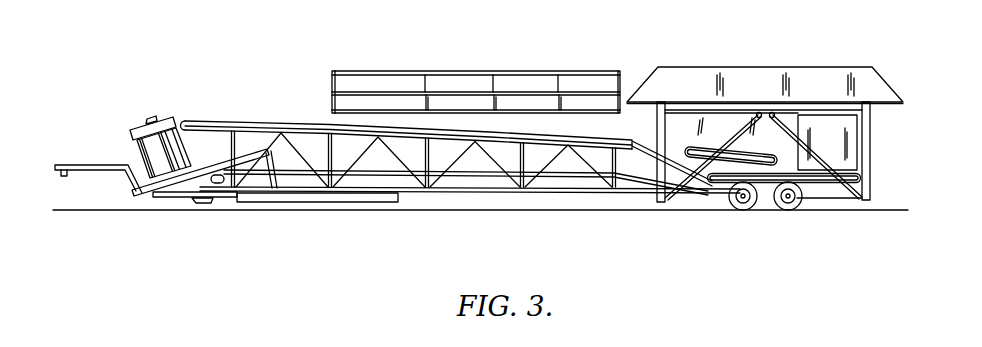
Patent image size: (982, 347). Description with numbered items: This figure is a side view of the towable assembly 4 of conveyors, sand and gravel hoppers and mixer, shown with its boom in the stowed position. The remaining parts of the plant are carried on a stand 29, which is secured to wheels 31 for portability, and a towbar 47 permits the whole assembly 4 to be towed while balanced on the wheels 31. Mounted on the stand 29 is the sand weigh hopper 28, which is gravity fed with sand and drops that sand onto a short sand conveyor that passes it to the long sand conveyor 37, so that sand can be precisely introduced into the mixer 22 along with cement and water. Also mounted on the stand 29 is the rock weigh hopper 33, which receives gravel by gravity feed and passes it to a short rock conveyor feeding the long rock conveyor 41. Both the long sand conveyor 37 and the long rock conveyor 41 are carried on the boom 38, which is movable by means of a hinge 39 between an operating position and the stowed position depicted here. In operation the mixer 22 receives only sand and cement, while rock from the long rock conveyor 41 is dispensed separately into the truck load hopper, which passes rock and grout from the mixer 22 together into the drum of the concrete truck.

The feed hopper 4 is at (147, 118).
The mixer 22 is at (200, 121).
The long sand conveyor 37 is at (263, 120).
The towbar 47 is at (97, 164).
The weigh hopper 28 is at (733, 120).
The rock weigh hopper 33 is at (822, 115).
The long rock conveyor 41 is at (475, 176).
The boom 38 is at (547, 193).
The hinge 39 is at (633, 178).
The wheels 31 is at (778, 209).
The stand 29 is at (871, 166).